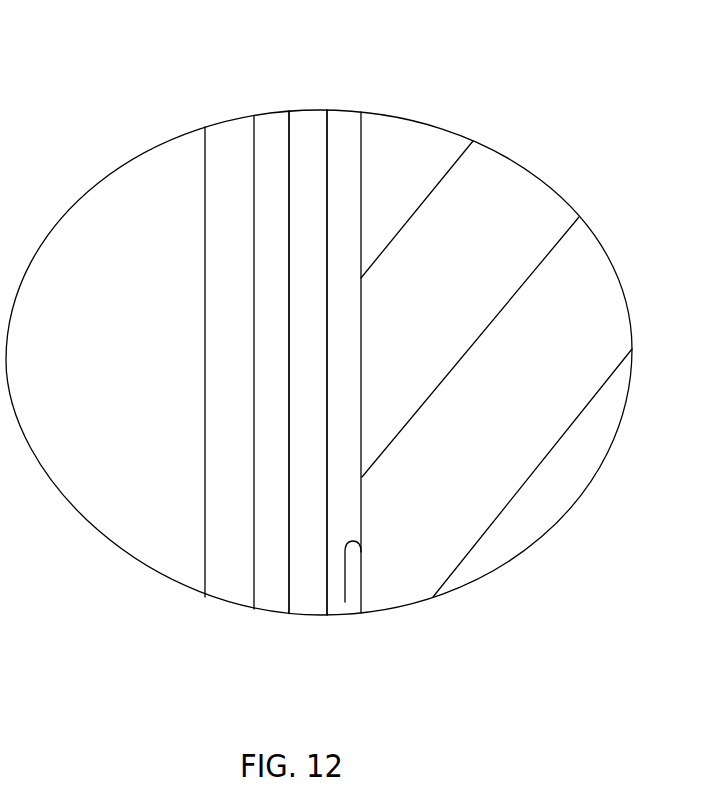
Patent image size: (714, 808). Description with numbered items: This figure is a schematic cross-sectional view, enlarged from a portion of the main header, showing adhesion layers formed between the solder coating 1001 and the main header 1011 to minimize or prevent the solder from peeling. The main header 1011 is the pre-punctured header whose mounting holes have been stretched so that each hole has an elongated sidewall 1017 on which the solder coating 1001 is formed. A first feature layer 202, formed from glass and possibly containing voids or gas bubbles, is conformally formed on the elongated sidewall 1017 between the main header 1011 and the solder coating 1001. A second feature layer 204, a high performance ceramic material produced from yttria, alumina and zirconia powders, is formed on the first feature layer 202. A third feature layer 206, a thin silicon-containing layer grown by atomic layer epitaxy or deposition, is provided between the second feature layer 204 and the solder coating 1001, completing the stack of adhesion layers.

The solder coating 1001 is at (228, 152).
The third feature layer 206 is at (269, 150).
The second feature layer 204 is at (304, 143).
The first feature layer 202 is at (344, 143).
The main header 1011 is at (478, 225).
The elongated sidewall 1017 is at (345, 602).